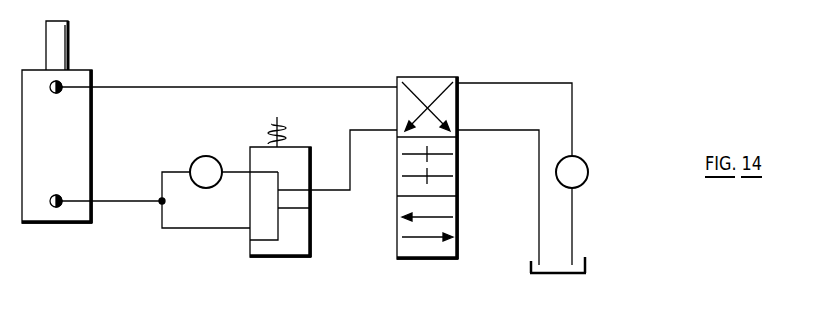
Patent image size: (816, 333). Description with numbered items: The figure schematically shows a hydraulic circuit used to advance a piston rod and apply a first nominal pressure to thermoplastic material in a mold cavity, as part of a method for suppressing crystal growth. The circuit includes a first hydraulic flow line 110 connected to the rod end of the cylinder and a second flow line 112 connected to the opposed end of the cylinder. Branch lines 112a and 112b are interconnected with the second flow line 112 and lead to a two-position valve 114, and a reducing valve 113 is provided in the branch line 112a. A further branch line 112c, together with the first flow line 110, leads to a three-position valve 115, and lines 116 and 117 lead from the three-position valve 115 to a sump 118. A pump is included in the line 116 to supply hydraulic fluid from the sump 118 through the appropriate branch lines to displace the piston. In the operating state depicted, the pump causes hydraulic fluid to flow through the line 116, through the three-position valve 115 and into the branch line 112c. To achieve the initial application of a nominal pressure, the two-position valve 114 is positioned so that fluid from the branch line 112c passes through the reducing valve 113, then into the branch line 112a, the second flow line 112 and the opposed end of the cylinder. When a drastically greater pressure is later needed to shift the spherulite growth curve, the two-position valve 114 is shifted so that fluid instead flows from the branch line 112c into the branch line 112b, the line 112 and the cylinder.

The first hydraulic flow line 110 is at (198, 87).
The second flow line 112 is at (142, 200).
The branch line 112a is at (177, 172).
The branch line 112b is at (178, 229).
The branch line 112c is at (345, 189).
The reducing valve 113 is at (202, 189).
The two-position valve 114 is at (259, 146).
The three-position valve 115 is at (446, 77).
The line 116 is at (572, 110).
The line 117 is at (539, 215).
The sump 118 is at (585, 278).